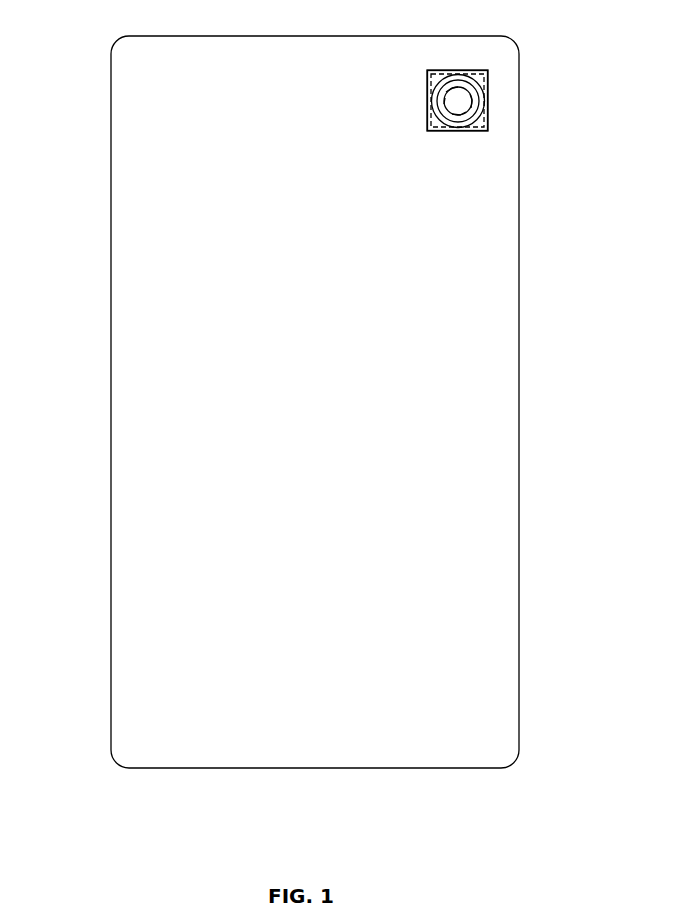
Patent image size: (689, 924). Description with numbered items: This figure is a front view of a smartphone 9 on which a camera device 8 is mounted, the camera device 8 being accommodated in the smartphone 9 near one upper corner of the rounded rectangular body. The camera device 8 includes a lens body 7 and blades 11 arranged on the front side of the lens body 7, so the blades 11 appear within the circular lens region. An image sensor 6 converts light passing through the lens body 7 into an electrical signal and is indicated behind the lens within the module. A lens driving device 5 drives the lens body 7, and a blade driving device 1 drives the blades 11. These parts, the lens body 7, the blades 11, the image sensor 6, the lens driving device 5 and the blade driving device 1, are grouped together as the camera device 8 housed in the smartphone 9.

The blade driving device 1 is at (479, 80).
The lens driving device 5 is at (488, 98).
The image sensor 6 is at (484, 118).
The lens body 7 is at (464, 106).
The camera device 8 is at (553, 68).
The smartphone 9 is at (111, 517).
The blades 11 is at (460, 115).